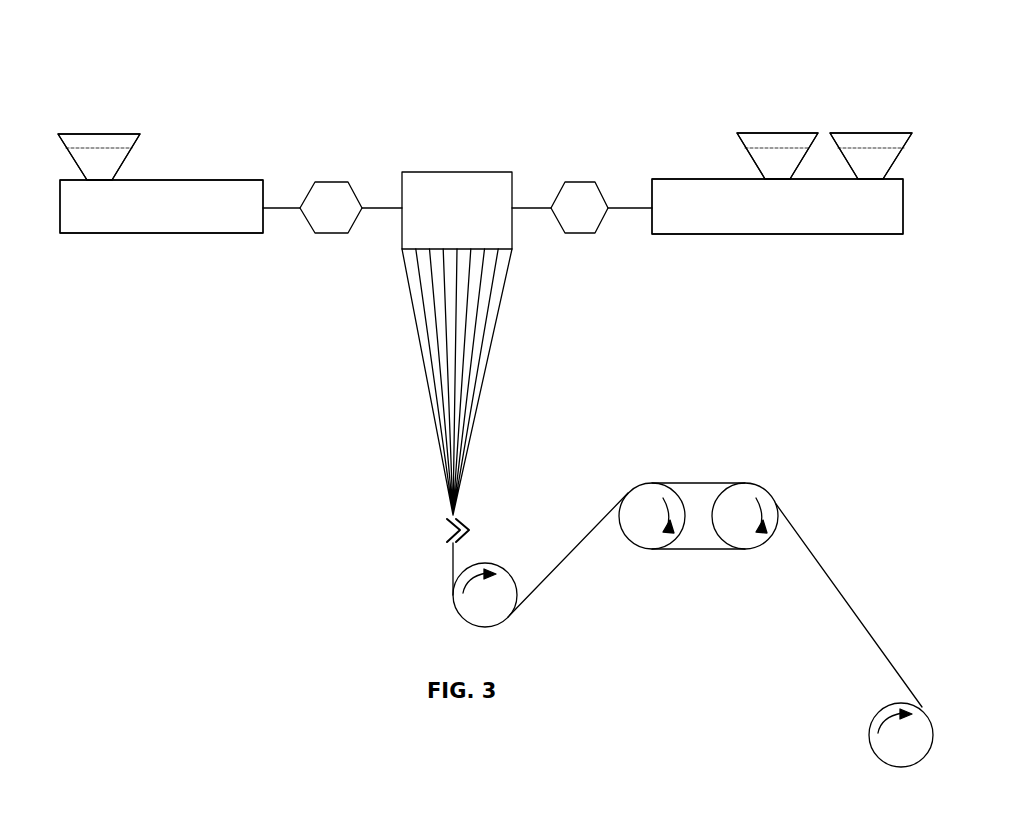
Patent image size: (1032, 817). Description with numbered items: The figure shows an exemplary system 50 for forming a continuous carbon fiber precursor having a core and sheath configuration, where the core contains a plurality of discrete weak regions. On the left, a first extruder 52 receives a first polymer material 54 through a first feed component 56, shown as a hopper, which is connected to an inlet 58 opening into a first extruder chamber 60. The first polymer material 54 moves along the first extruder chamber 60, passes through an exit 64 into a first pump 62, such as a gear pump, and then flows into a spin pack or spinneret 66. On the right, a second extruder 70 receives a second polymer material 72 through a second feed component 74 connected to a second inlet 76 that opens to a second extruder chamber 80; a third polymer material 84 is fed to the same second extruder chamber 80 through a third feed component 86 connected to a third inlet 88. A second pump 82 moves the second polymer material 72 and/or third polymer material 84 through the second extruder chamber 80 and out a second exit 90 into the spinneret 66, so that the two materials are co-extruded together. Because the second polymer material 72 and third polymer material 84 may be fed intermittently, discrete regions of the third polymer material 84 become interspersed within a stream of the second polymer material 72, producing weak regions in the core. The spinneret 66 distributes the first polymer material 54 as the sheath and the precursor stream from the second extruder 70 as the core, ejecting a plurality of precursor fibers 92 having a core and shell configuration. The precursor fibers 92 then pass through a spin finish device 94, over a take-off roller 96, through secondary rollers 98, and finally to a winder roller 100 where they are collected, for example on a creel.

The system 50 is at (85, 100).
The first extruder 52 is at (209, 180).
The first polymer material 54 is at (99, 157).
The first feed component 56 is at (65, 133).
The inlet 58 is at (98, 180).
The first extruder chamber 60 is at (161, 206).
The first pump 62 is at (331, 207).
The exit 64 is at (264, 207).
The spin pack or spinneret 66 is at (457, 210).
The second extruder 70 is at (692, 179).
The second polymer material 72 is at (777, 156).
The second feed component 74 is at (768, 133).
The second inlet 76 is at (780, 179).
The second extruder chamber 80 is at (777, 206).
The second pump 82 is at (579, 207).
The third polymer material 84 is at (871, 156).
The third feed component 86 is at (862, 133).
The third inlet 88 is at (867, 179).
The second exit 90 is at (650, 207).
The precursor fibers 92 is at (426, 318).
The spin finish device 94 is at (450, 535).
The take-off roller 96 is at (455, 602).
The secondary rollers 98 is at (747, 550).
The winder roller 100 is at (873, 752).